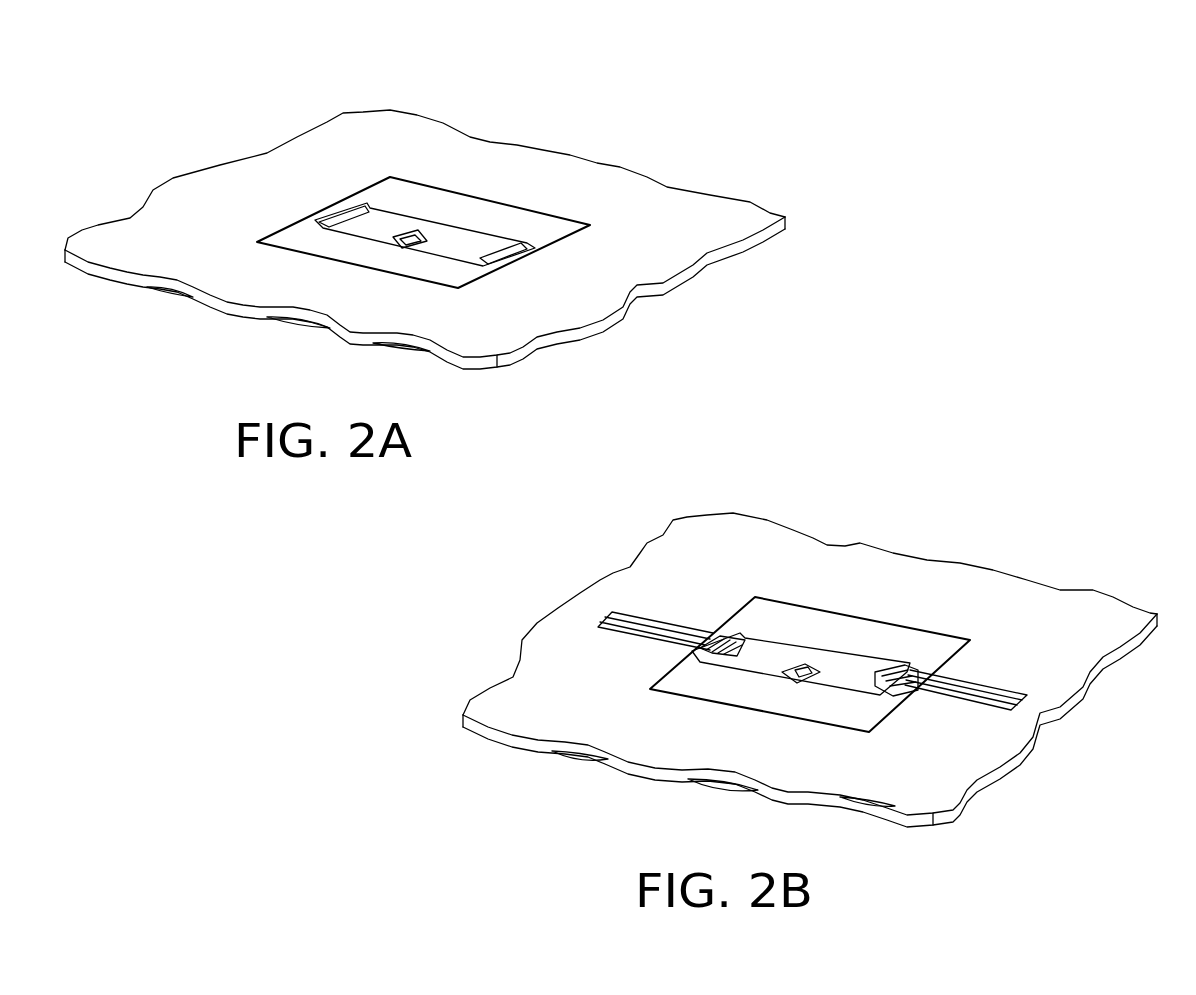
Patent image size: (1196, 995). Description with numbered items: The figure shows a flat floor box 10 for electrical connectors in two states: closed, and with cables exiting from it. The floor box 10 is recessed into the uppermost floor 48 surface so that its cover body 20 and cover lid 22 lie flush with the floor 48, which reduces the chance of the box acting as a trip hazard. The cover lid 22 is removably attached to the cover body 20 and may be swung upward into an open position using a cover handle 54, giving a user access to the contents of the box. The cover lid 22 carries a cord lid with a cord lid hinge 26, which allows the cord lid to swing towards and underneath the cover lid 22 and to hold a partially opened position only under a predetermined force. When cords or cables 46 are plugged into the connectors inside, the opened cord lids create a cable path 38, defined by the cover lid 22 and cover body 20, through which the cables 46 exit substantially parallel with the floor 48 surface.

In FIG. 2A, the floor box 10 is at (240, 112).
In FIG. 2B, the floor box 10 is at (992, 520).
In FIG. 2A, the cover body 20 is at (527, 230).
In FIG. 2B, the cover body 20 is at (813, 630).
In FIG. 2A, the cover lid 22 is at (462, 233).
In FIG. 2B, the cover lid 22 is at (767, 650).
In FIG. 2A, the cord lid hinge 26 is at (345, 208).
In FIG. 2B, the cable path 38 is at (725, 635).
In FIG. 2B, the cables 46 is at (640, 632).
In FIG. 2A, the floor 48 is at (702, 203).
In FIG. 2B, the floor 48 is at (1023, 602).
In FIG. 2A, the cover handle 54 is at (427, 242).
In FIG. 2B, the cover handle 54 is at (808, 672).